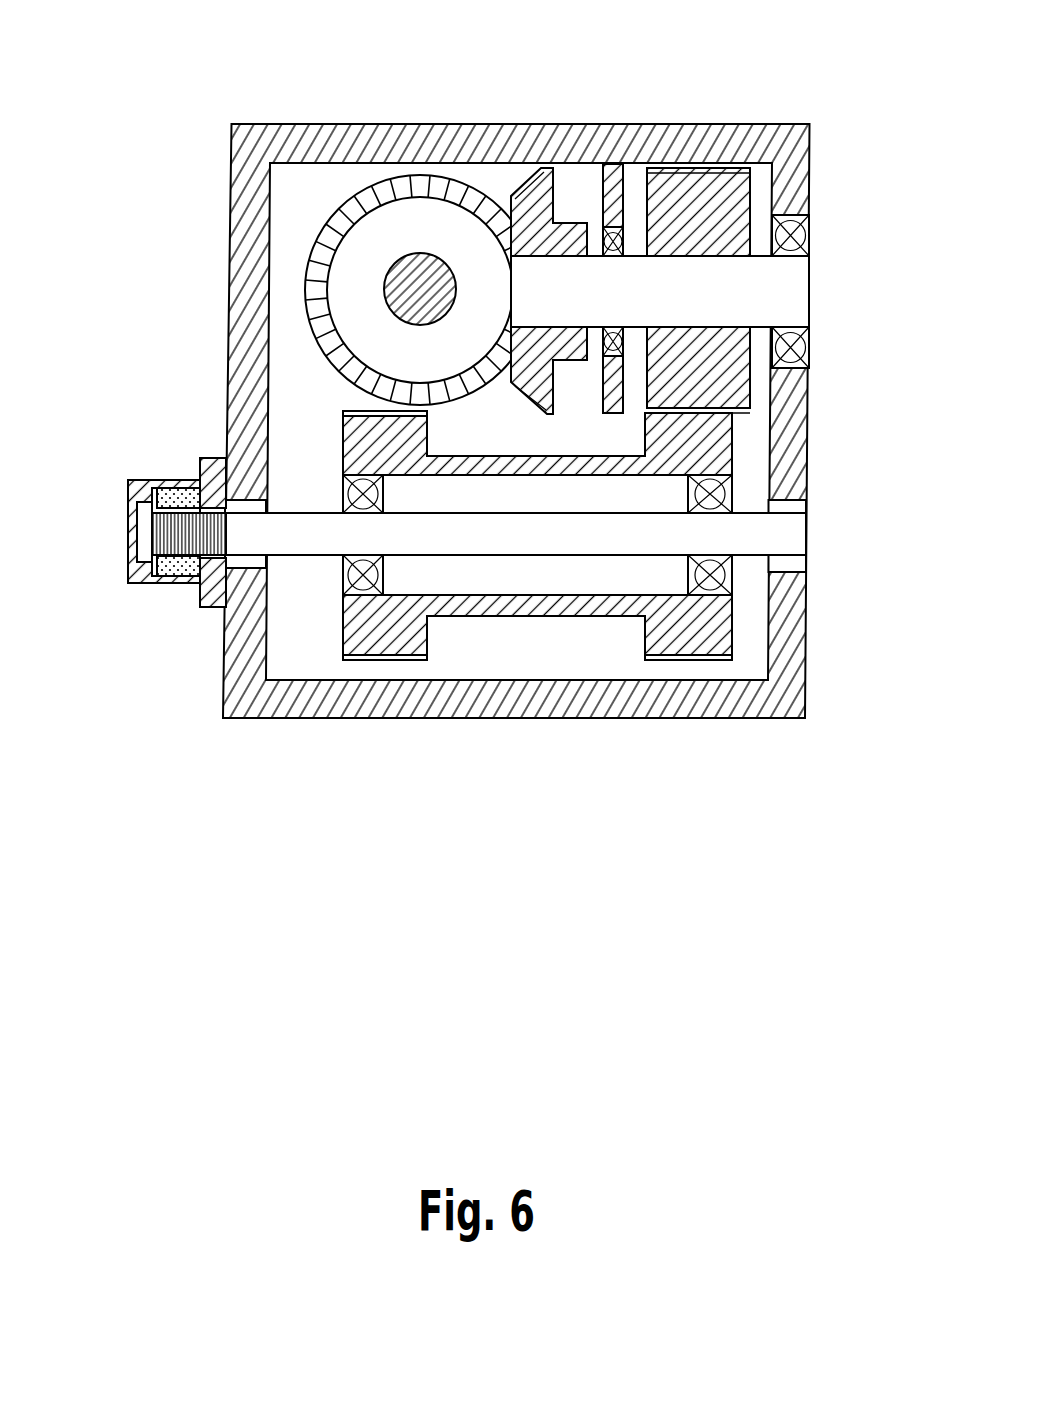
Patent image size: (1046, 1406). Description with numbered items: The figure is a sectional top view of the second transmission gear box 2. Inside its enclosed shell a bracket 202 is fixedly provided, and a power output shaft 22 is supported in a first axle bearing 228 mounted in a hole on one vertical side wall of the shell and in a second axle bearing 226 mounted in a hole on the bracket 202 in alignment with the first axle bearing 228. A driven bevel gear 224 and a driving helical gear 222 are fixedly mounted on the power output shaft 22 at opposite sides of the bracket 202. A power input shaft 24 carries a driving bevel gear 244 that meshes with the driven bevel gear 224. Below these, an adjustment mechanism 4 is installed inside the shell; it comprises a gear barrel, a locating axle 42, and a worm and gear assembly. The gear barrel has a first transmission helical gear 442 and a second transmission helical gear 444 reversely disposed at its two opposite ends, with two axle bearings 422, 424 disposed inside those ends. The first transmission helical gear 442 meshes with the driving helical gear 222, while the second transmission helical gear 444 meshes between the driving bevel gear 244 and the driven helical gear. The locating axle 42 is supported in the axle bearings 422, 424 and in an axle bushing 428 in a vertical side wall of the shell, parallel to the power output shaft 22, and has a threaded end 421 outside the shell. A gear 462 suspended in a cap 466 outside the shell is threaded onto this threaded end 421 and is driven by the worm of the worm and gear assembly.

The second transmission gear box 2 is at (824, 88).
The power output shaft 22 is at (797, 293).
The power input shaft 24 is at (412, 290).
The bracket 202 is at (612, 200).
The driving helical gear 222 is at (693, 173).
The driven bevel gear 224 is at (533, 165).
The second axle bearing 226 is at (622, 240).
The first axle bearing 228 is at (798, 237).
The driving bevel gear 244 is at (415, 185).
The adjustment mechanism 4 is at (604, 579).
The locating axle 42 is at (793, 538).
The threaded end 421 is at (155, 530).
The axle bearing 422 is at (345, 577).
The axle bearing 424 is at (725, 497).
The axle bushing 428 is at (793, 508).
The first transmission helical gear 442 is at (713, 448).
The second transmission helical gear 444 is at (387, 652).
The gear 462 is at (177, 493).
The cap 466 is at (148, 581).